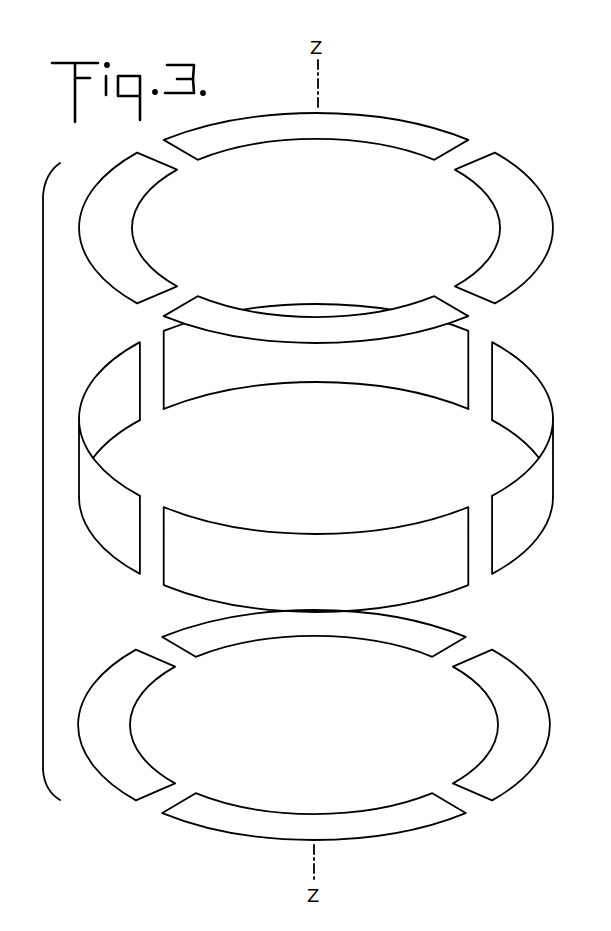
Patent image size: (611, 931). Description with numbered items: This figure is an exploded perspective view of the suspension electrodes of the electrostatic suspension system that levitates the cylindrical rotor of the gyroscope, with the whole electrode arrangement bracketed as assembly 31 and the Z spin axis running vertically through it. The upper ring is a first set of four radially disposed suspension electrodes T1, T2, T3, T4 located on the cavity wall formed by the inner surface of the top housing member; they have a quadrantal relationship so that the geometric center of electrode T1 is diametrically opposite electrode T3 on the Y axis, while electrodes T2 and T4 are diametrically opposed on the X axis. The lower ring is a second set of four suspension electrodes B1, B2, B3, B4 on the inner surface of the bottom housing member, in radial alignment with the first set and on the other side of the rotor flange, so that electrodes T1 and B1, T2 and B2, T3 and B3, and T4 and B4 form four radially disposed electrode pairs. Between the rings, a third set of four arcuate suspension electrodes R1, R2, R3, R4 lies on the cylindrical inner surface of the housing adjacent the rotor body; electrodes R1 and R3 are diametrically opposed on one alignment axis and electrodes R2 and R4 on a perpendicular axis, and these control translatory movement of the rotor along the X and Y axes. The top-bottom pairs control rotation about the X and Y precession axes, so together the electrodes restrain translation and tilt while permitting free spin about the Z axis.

The segmented electrode assembly 31 is at (610, 312).
The suspension electrode T1 is at (100, 246).
The suspension electrode T2 is at (335, 130).
The suspension electrode T3 is at (515, 198).
The suspension electrode T4 is at (332, 337).
The suspension electrode R1 is at (122, 388).
The suspension electrode R2 is at (220, 375).
The suspension electrode R3 is at (515, 393).
The suspension electrode R4 is at (296, 543).
The suspension electrode B1 is at (120, 688).
The suspension electrode B2 is at (352, 622).
The suspension electrode B3 is at (523, 690).
The suspension electrode B4 is at (236, 820).